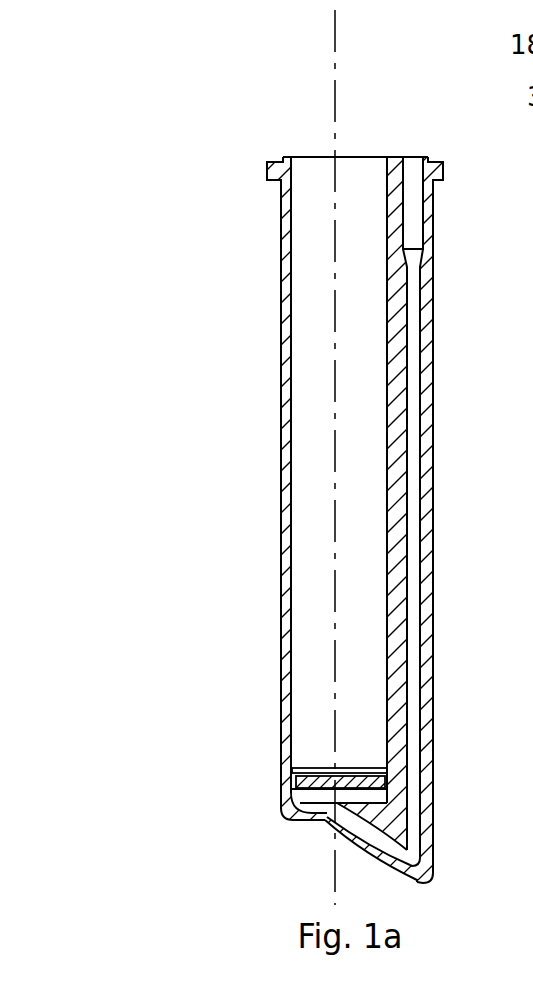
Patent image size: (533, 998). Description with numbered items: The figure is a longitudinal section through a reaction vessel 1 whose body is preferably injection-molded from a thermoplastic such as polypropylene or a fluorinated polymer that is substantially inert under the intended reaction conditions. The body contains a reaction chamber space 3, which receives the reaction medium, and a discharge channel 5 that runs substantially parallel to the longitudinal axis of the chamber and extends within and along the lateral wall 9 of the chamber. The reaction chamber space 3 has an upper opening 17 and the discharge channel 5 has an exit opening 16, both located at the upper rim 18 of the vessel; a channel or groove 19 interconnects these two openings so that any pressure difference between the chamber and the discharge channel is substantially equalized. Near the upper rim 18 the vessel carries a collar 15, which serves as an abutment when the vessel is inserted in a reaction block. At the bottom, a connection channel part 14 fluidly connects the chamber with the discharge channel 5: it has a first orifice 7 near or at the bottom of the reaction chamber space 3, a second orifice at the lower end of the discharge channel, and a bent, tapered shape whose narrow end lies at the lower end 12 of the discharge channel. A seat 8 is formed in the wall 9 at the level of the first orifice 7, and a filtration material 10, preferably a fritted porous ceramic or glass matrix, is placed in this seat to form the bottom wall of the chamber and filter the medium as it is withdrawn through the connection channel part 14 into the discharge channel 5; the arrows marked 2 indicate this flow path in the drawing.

The reaction vessel 1 is at (240, 410).
The fluid flow direction 2 is at (348, 250).
The reaction chamber space 3 is at (320, 305).
The discharge channel 5 is at (413, 526).
The first orifice 7 is at (313, 793).
The seat 8 is at (292, 782).
The lateral wall 9 is at (287, 633).
The filtration material 10 is at (293, 775).
The lower end 12 is at (417, 850).
The connection channel part 14 is at (385, 835).
The collar 15 is at (267, 170).
The exit opening 16 is at (407, 157).
The upper opening 17 is at (332, 157).
The upper rim 18 is at (283, 157).
The channel or groove 19 is at (385, 157).